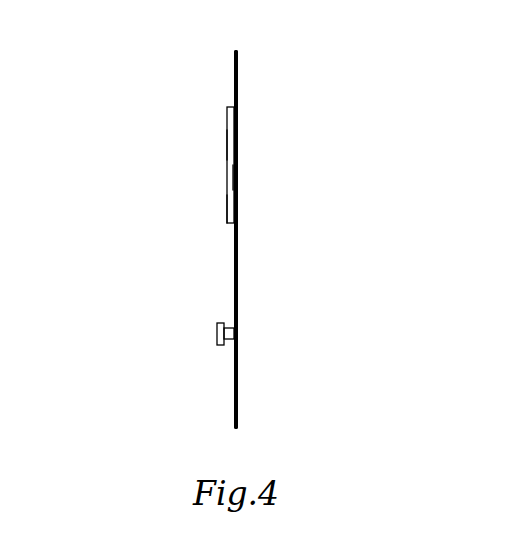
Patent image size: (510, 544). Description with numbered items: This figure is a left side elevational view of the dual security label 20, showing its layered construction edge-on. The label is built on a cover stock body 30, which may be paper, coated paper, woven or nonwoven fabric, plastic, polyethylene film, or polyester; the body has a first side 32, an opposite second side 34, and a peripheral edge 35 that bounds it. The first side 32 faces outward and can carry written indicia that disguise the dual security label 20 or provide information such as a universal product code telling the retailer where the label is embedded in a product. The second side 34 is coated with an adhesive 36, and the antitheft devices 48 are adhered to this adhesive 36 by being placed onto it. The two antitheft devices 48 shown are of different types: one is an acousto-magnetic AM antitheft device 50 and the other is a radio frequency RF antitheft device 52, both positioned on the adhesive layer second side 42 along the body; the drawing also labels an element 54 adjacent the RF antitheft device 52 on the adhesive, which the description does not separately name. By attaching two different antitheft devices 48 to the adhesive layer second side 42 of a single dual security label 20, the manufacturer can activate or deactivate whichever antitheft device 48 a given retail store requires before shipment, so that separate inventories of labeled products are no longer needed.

The dual security label 20 is at (260, 72).
The cover stock body 30 is at (237, 142).
The first side 32 is at (238, 275).
The second side 34 is at (236, 63).
The peripheral edge 35 is at (237, 413).
The adhesive 36 is at (236, 242).
The adhesive layer second side 42 is at (236, 90).
The antitheft devices 48 is at (232, 176).
The AM antitheft device 50 is at (217, 326).
The RF antitheft device 52 is at (227, 143).
The lower end of mounting member 54 is at (227, 203).